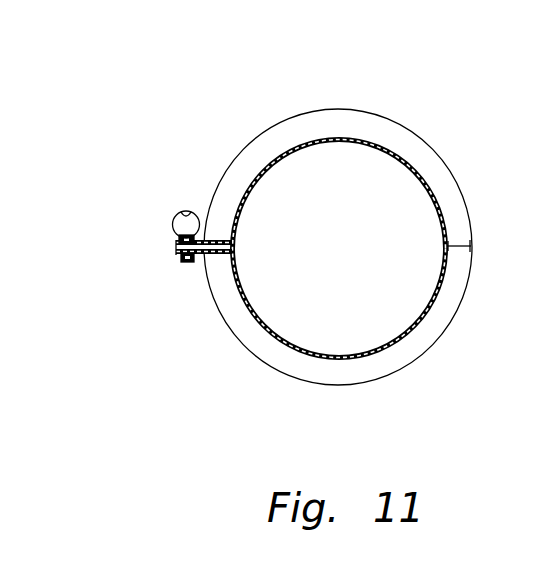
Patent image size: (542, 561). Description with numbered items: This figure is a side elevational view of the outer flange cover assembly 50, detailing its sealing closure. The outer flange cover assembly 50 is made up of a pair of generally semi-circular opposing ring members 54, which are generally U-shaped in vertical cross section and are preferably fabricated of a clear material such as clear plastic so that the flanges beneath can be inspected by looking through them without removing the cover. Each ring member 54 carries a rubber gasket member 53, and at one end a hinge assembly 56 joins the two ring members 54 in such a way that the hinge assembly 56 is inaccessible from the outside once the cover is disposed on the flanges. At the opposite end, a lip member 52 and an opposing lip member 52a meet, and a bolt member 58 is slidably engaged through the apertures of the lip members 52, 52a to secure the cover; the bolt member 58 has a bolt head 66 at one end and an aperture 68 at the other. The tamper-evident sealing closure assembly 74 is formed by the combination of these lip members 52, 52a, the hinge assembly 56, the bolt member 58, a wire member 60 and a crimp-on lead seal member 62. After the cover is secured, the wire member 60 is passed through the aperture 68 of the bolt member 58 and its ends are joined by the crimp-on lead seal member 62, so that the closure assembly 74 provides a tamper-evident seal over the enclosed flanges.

The outer flange cover assembly 50 is at (441, 100).
The lip member 52 is at (178, 250).
The lip member 52a is at (178, 245).
The rubber gasket member 53 is at (271, 157).
The ring member 54 is at (335, 122).
The hinge assembly 56 is at (473, 247).
The bolt member 58 is at (181, 274).
The wire member 60 is at (186, 211).
The crimp-on lead seal member 62 is at (180, 237).
The bolt head 66 is at (180, 260).
The aperture 68 is at (177, 240).
The tamper-evident sealing closure assembly 74 is at (108, 206).